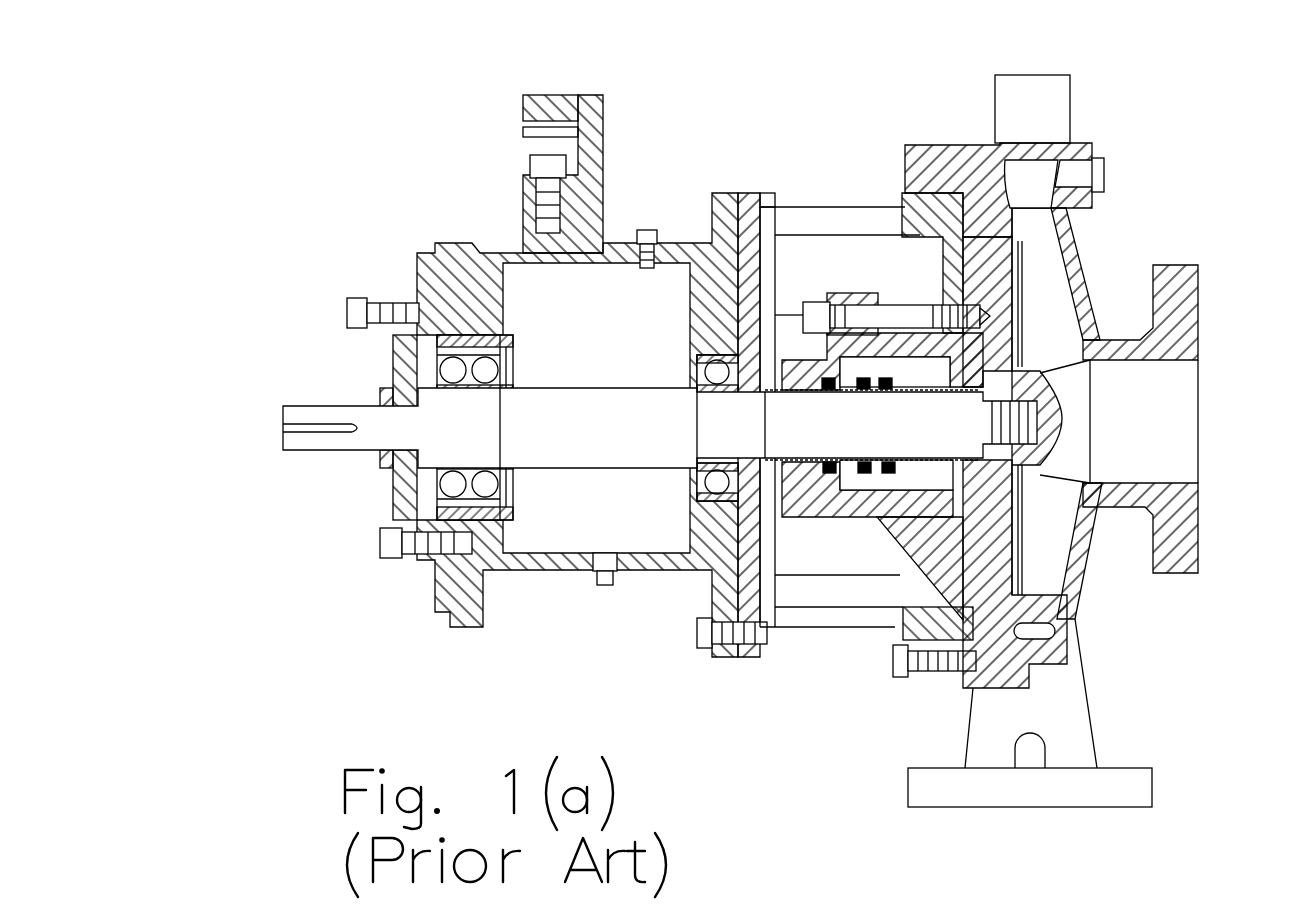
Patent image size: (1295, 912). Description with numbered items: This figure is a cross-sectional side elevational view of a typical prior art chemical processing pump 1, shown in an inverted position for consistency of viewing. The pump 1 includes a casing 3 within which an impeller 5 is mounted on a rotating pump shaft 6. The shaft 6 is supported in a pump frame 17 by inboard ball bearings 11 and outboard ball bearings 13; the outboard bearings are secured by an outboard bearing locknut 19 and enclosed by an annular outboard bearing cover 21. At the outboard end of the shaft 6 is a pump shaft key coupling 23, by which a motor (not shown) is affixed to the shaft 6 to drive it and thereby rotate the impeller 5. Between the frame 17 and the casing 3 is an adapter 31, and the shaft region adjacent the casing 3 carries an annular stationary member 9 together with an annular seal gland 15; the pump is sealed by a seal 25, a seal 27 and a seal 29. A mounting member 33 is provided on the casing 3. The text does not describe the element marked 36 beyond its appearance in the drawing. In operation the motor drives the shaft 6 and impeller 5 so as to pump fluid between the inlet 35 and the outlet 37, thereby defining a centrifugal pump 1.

The chemical processing pump 1 is at (840, 82).
The casing 3 is at (1170, 280).
The impeller 5 is at (1040, 280).
The rotating pump shaft 6 is at (575, 400).
The annular stationary member 9 is at (918, 337).
The inboard ball bearings 11 is at (690, 485).
The outboard ball bearings 13 is at (517, 360).
The annular seal gland 15 is at (805, 510).
The pump frame 17 is at (615, 247).
The outboard bearing locknut 19 is at (425, 483).
The annular outboard bearing cover 21 is at (392, 343).
The pump shaft key coupling 23 is at (330, 432).
The seal 25 is at (763, 497).
The seal 27 is at (873, 380).
The seal 29 is at (390, 390).
The adapter 31 is at (785, 223).
The mounting member 33 is at (1020, 105).
The inlet 35 is at (1155, 400).
The cover wall 36 is at (817, 245).
The outlet 37 is at (1052, 820).